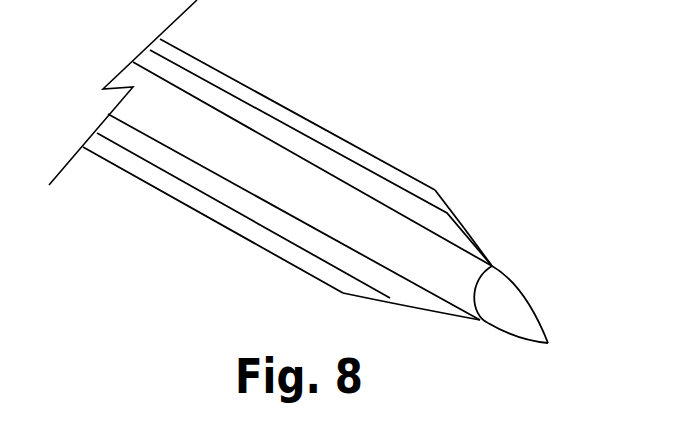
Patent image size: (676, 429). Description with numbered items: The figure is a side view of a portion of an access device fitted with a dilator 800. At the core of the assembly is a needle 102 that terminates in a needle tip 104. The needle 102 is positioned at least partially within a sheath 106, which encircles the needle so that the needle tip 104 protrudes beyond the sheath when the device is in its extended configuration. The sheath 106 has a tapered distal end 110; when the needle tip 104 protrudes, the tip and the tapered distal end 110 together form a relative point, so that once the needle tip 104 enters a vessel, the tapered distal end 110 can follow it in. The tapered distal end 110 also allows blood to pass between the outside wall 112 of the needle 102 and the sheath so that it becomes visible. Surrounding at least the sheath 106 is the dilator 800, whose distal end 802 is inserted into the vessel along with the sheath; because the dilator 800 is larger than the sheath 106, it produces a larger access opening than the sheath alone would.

The dilator 800 is at (193, 57).
The distal end of dilator 802 is at (436, 197).
The needle 102 is at (313, 165).
The needle tip 104 is at (528, 302).
The sheath 106 is at (395, 185).
The tapered distal end 110 is at (476, 245).
The outside wall 112 is at (258, 150).